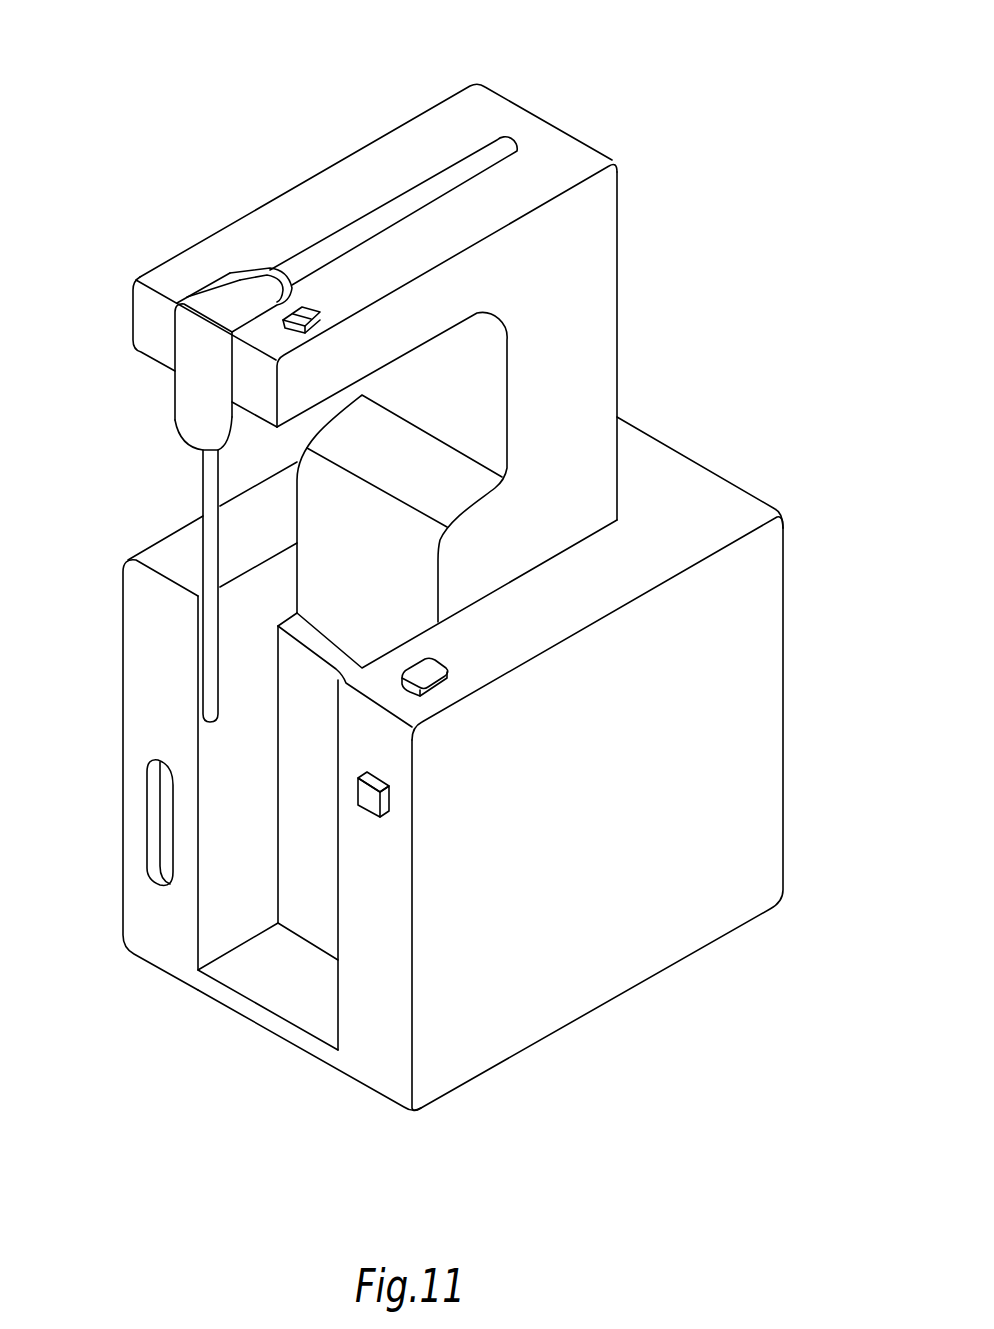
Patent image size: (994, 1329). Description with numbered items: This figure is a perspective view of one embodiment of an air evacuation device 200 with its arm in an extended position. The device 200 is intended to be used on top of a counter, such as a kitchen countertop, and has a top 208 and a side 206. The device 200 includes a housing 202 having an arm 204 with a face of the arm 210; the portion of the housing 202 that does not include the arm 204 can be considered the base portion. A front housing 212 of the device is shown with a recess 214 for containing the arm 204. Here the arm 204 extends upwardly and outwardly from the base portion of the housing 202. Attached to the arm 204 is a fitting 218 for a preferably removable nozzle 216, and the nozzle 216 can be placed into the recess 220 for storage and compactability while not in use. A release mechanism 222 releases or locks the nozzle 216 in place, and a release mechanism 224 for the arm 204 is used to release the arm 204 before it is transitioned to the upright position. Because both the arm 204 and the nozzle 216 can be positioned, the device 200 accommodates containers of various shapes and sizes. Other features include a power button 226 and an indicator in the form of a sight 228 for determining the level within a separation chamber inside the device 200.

The air evacuation device 200 is at (573, 46).
The housing 202 is at (783, 705).
The arm 204 is at (618, 348).
The side 206 is at (633, 965).
The top 208 is at (700, 480).
The face of the arm 210 is at (272, 215).
The front housing 212 is at (137, 712).
The recess 214 is at (282, 945).
The nozzle 216 is at (210, 665).
The fitting 218 is at (185, 405).
The recess 220 is at (440, 188).
The release mechanism 222 is at (305, 312).
The release mechanism 224 is at (430, 668).
The power button 226 is at (370, 808).
The sight 228 is at (165, 822).